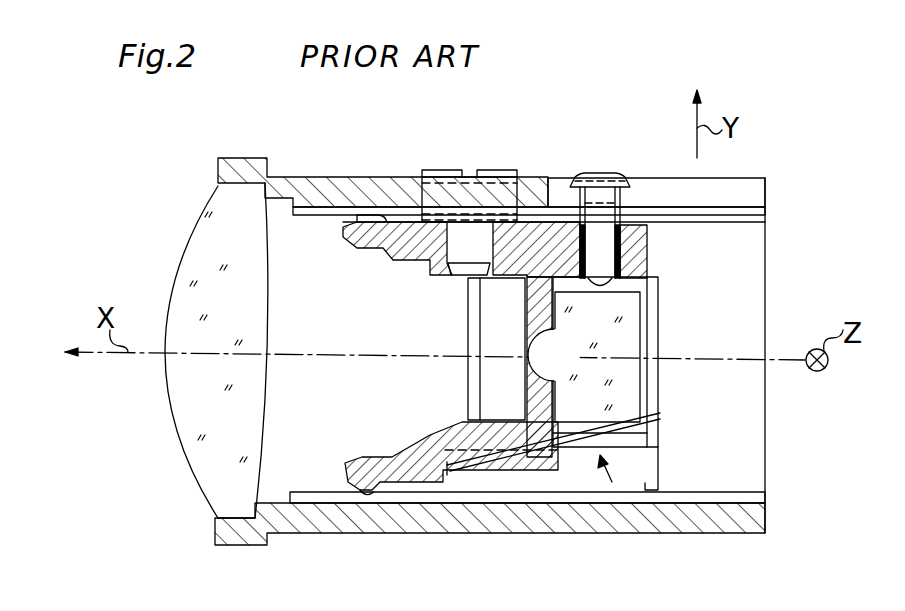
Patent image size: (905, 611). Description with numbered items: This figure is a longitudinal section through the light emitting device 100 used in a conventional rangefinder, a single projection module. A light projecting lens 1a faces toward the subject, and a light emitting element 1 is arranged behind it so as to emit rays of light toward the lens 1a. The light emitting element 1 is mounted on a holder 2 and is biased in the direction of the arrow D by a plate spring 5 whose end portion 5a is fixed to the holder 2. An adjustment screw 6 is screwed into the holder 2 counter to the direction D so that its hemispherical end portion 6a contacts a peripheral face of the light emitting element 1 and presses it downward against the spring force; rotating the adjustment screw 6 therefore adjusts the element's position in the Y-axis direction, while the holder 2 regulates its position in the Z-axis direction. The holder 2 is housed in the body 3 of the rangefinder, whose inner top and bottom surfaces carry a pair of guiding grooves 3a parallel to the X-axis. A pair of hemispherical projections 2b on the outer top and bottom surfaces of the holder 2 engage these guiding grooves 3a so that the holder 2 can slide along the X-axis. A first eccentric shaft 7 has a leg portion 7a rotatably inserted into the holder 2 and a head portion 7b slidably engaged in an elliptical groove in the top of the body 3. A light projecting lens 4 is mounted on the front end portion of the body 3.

The light emitting device 100 is at (598, 85).
The light emitting element 1 is at (625, 320).
The light projecting lens 1a is at (530, 368).
The holder 2 is at (405, 453).
The hemispherical projections 2b is at (376, 213).
The body of the rangefinder 3 is at (310, 180).
The guiding grooves 3a is at (312, 215).
The light projecting lens 4 is at (208, 440).
The plate spring 5 is at (548, 468).
The end portion of the plate spring 5a is at (462, 472).
The adjustment screw 6 is at (592, 173).
The hemispherical end portion of the adjustment screw 6a is at (630, 288).
The first eccentric shaft 7 is at (497, 172).
The leg portion of the first eccentric shaft 7a is at (443, 265).
The head portion of the first eccentric shaft 7b is at (438, 172).
The direction arrow D is at (604, 527).